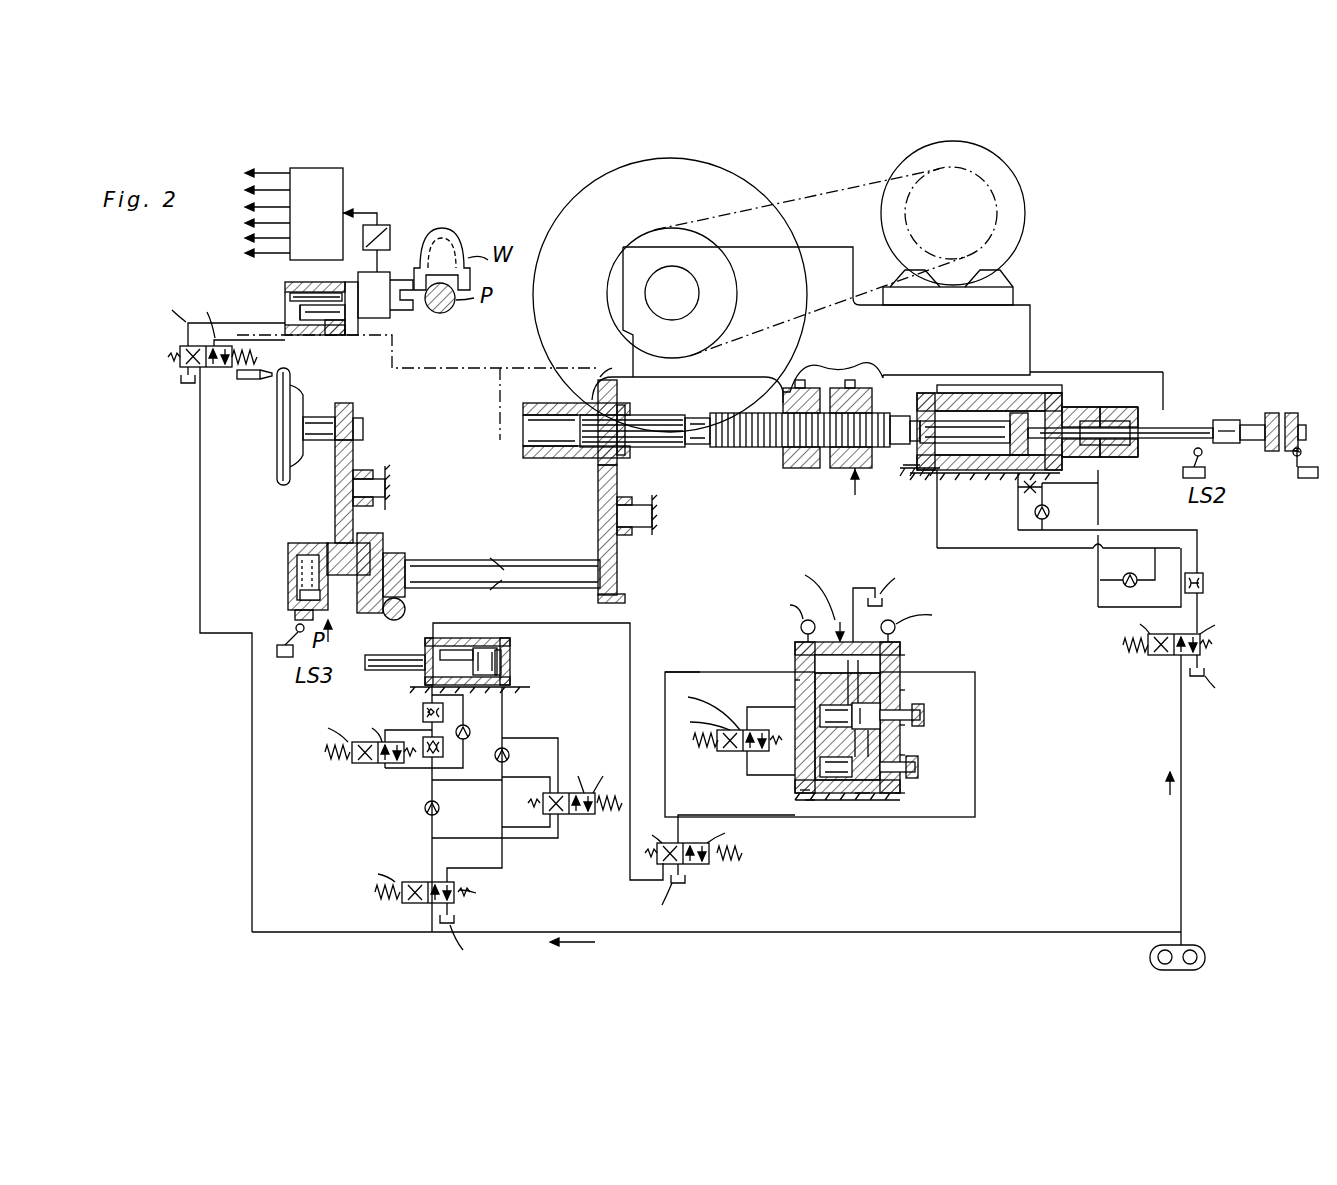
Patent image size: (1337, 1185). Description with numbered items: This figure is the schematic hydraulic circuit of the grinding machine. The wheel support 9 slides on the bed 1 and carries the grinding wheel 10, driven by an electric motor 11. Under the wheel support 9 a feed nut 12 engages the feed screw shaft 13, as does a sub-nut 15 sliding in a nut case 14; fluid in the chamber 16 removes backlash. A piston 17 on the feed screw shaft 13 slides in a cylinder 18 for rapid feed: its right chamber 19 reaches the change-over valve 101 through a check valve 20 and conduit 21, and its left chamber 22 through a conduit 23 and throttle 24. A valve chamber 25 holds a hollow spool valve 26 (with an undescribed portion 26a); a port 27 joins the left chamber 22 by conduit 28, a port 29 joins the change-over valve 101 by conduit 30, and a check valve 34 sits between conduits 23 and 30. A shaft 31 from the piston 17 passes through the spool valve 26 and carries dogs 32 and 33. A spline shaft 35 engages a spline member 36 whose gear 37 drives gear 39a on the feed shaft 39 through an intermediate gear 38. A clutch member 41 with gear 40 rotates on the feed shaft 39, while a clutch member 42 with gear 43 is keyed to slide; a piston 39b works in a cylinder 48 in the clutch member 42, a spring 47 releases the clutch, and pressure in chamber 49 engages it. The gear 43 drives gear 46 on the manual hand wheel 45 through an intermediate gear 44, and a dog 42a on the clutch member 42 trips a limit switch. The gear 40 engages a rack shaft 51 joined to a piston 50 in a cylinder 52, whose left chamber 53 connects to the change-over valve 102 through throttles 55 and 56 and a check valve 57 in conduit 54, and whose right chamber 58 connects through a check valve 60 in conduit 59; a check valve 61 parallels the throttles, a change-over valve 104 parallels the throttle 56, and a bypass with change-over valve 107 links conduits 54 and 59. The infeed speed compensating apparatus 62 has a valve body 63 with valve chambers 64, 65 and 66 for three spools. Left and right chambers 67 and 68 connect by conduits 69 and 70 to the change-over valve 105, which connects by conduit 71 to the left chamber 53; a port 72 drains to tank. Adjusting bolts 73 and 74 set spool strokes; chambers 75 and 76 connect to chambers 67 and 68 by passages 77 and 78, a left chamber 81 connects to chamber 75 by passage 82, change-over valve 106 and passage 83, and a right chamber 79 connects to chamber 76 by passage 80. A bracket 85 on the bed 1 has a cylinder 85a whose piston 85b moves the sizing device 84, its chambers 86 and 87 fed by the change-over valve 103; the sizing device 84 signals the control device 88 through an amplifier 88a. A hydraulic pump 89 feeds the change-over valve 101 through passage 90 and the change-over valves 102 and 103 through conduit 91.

The bed 1 is at (395, 378).
The wheel support 9 is at (836, 260).
The grinding wheel 10 is at (591, 198).
The electric motor 11 is at (1025, 215).
The feed nut 12 is at (795, 468).
The feed screw shaft 13 is at (740, 447).
The nut case 14 is at (905, 475).
The sub-nut 15 is at (840, 468).
The chamber 16 is at (875, 408).
The piston 17 is at (1022, 485).
The cylinder 18 is at (962, 472).
The right chamber 19 is at (1043, 417).
The check valve 20 is at (1050, 510).
The conduit 21 is at (1200, 547).
The left chamber 22 is at (965, 395).
The conduit 23 is at (997, 547).
The throttle 24 is at (1204, 585).
The valve chamber 25 is at (1135, 412).
The hollow spool valve 26 is at (1150, 420).
The sleeve 26a is at (1130, 412).
The port 27 is at (1095, 410).
The conduit 28 is at (1010, 393).
The port 29 is at (1098, 478).
The conduit 30 is at (1098, 592).
The shaft 31 is at (1190, 428).
The dog 32 is at (1228, 422).
The dog 33 is at (1282, 412).
The check valve 34 is at (1127, 573).
The spline shaft 35 is at (660, 447).
The internal spline member 36 is at (545, 458).
The gear 37 is at (598, 460).
The intermediate gear 38 is at (598, 565).
The feed shaft 39 is at (498, 562).
The gear 39a is at (625, 600).
The piston 39b is at (298, 570).
The gear 40 is at (403, 558).
The clutch member 41 is at (383, 542).
The clutch member 42 is at (288, 549).
The dog 42a is at (295, 615).
The gear 43 is at (330, 533).
The intermediate gear 44 is at (336, 460).
The manual hand wheel 45 is at (278, 464).
The gear 46 is at (355, 414).
The spring 47 is at (300, 595).
The cylinder 48 is at (253, 645).
The chamber 49 is at (380, 660).
The piston 50 is at (510, 670).
The rack shaft 51 is at (402, 657).
The cylinder 52 is at (485, 650).
The left chamber 53 is at (455, 650).
The conduit 54 is at (437, 787).
The throttle 55 is at (422, 710).
The throttle 56 is at (430, 767).
The check valve 57 is at (428, 815).
The right chamber 58 is at (502, 652).
The conduit 59 is at (503, 717).
The check valve 60 is at (507, 755).
The check valve 61 is at (466, 726).
The infeed speed compensating apparatus 62 is at (840, 622).
The valve body 63 is at (820, 765).
The valve chamber 64 is at (847, 720).
The valve chamber 65 is at (868, 743).
The valve chamber 66 is at (860, 800).
The left chamber 67 is at (795, 655).
The right chamber 68 is at (905, 658).
The conduit 69 is at (680, 672).
The conduit 70 is at (975, 748).
The conduit 71 is at (630, 695).
The port 72 is at (853, 648).
The adjusting bolt 73 is at (924, 714).
The adjusting bolt 74 is at (918, 770).
The left chamber 75 is at (820, 715).
The right chamber 76 is at (905, 725).
The passage 77 is at (795, 680).
The passage 78 is at (905, 690).
The right chamber 79 is at (900, 795).
The passage 80 is at (905, 755).
The left chamber 81 is at (805, 800).
The passage 82 is at (800, 790).
The passage 83 is at (795, 707).
The sizing device 84 is at (378, 292).
The bracket 85 is at (290, 289).
The cylinder 85a is at (322, 300).
The piston 85b is at (330, 340).
The left chamber 86 is at (292, 318).
The right chamber 87 is at (340, 335).
The control device 88 is at (345, 185).
The amplifier 88a is at (390, 228).
The hydraulic pump 89 is at (1205, 950).
The passage 90 is at (1183, 810).
The conduit 91 is at (886, 932).
The change-over valve 101 is at (1162, 656).
The change-over valve 102 is at (425, 904).
The change-over valve 103 is at (216, 368).
The change-over valve 104 is at (370, 763).
The change-over valve 105 is at (700, 864).
The change-over valve 106 is at (728, 751).
The change-over valve 107 is at (568, 815).